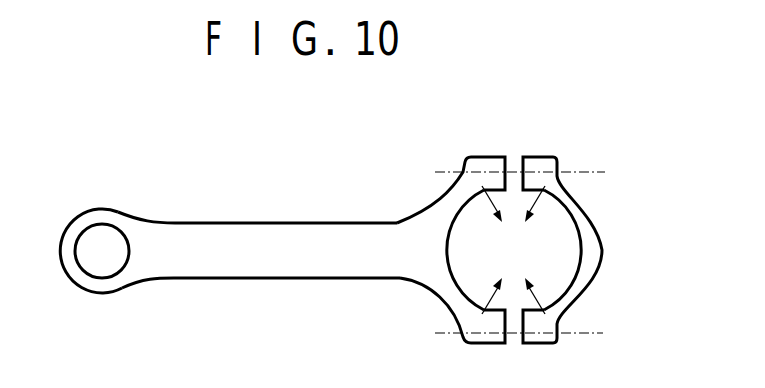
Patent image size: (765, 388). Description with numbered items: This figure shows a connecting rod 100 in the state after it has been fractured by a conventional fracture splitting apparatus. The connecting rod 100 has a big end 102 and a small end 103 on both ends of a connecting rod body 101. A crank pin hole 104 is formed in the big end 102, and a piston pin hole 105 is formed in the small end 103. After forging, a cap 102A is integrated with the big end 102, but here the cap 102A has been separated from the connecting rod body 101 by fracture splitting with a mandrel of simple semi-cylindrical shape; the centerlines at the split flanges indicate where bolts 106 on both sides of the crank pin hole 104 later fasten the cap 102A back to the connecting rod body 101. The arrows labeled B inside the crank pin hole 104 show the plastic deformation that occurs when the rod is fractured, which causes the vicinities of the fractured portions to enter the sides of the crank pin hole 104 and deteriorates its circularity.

The connecting rod 100 is at (277, 188).
The connecting rod body 101 is at (253, 280).
The big end 102 is at (440, 292).
The cap 102A is at (592, 272).
The small end 103 is at (96, 294).
The crank pin hole 104 is at (450, 238).
The piston pin hole 105 is at (100, 231).
The bolts 106 is at (585, 170).